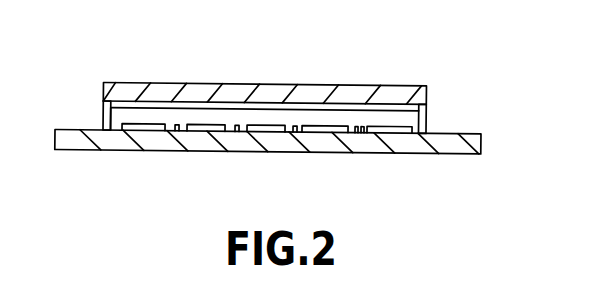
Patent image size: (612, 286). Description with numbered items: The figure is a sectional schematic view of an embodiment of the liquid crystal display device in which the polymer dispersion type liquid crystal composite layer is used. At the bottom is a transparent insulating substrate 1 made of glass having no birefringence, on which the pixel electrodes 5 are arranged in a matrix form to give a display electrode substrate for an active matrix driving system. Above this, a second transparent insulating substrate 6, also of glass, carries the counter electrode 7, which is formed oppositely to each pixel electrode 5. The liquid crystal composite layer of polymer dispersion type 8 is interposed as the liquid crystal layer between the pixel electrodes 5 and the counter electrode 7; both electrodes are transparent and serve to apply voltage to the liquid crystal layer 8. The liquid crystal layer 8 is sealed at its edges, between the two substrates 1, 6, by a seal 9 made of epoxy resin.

The transparent insulating substrate 1 is at (267, 170).
The pixel electrode 5 is at (266, 167).
The transparent insulating substrate 6 is at (352, 80).
The counter electrode 7 is at (412, 104).
The liquid crystal composite layer of polymer dispersion type 8 is at (83, 115).
The seal 9 is at (102, 103).